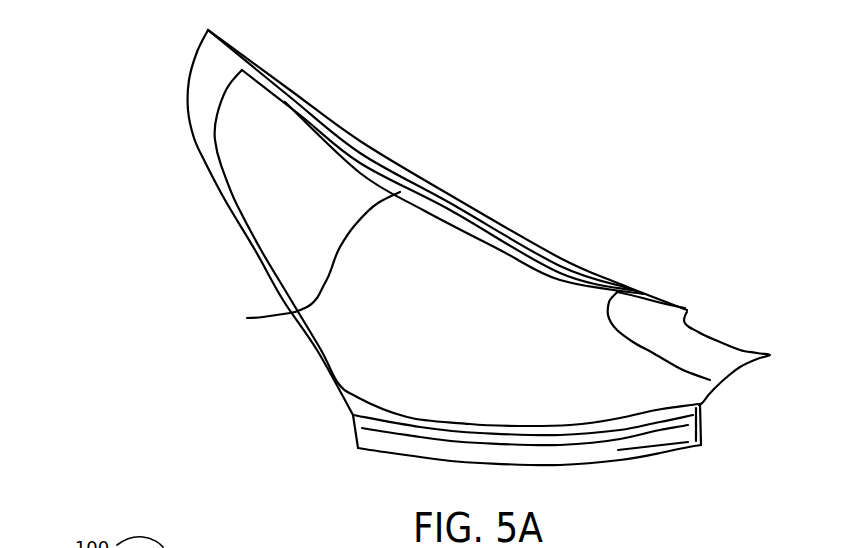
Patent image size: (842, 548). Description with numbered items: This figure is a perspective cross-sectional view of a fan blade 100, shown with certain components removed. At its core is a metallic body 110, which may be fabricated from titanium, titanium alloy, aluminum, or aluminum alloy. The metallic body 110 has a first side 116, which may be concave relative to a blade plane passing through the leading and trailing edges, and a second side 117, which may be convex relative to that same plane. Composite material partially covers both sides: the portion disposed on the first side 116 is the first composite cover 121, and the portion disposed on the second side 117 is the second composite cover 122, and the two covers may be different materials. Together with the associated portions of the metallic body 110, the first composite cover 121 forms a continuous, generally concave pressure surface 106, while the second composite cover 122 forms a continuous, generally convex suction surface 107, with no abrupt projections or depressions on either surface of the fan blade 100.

The fan blade 100 is at (105, 55).
The concave pressure surface 106 is at (463, 162).
The convex suction surface 107 is at (353, 329).
The metallic body 110 is at (238, 61).
The first side 116 is at (393, 182).
The second side 117 is at (302, 268).
The first composite cover 121 is at (508, 236).
The second composite cover 122 is at (245, 173).